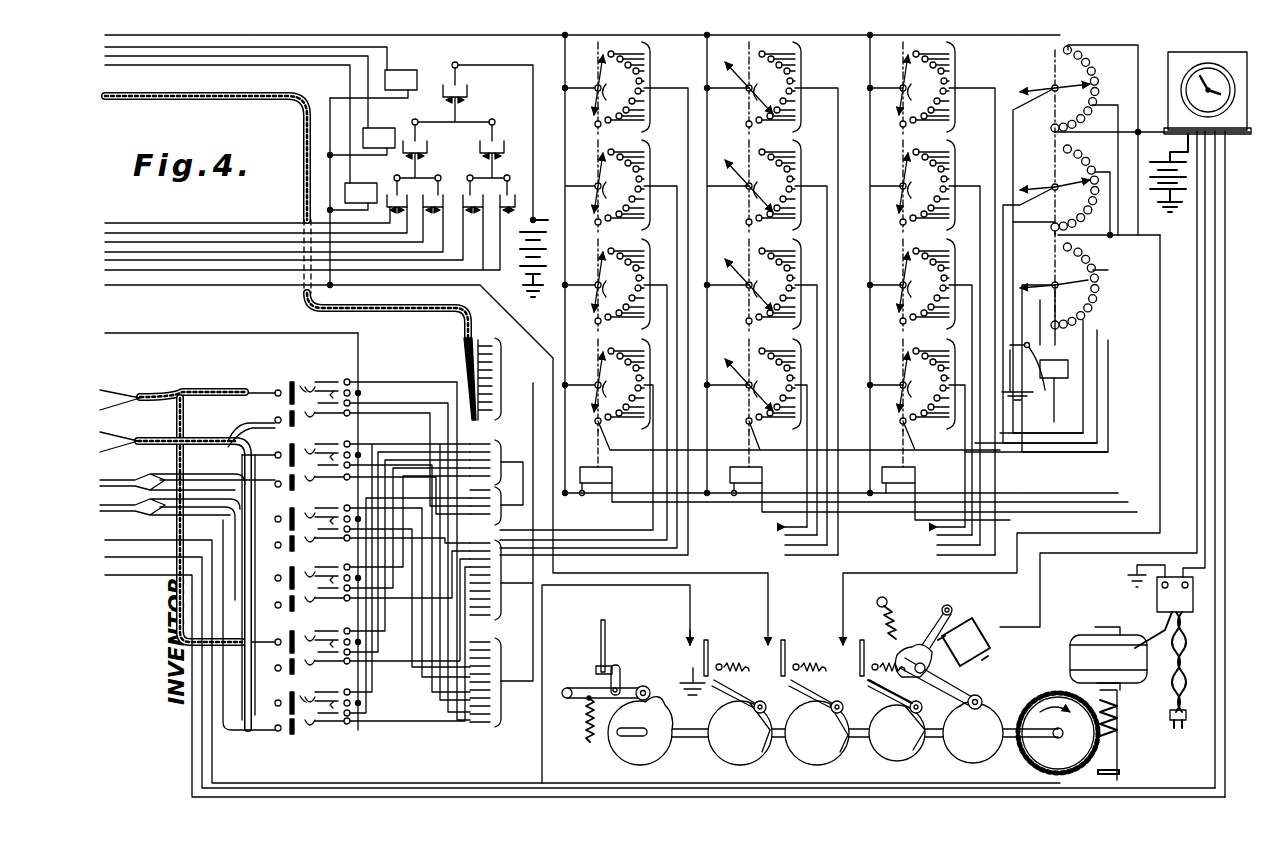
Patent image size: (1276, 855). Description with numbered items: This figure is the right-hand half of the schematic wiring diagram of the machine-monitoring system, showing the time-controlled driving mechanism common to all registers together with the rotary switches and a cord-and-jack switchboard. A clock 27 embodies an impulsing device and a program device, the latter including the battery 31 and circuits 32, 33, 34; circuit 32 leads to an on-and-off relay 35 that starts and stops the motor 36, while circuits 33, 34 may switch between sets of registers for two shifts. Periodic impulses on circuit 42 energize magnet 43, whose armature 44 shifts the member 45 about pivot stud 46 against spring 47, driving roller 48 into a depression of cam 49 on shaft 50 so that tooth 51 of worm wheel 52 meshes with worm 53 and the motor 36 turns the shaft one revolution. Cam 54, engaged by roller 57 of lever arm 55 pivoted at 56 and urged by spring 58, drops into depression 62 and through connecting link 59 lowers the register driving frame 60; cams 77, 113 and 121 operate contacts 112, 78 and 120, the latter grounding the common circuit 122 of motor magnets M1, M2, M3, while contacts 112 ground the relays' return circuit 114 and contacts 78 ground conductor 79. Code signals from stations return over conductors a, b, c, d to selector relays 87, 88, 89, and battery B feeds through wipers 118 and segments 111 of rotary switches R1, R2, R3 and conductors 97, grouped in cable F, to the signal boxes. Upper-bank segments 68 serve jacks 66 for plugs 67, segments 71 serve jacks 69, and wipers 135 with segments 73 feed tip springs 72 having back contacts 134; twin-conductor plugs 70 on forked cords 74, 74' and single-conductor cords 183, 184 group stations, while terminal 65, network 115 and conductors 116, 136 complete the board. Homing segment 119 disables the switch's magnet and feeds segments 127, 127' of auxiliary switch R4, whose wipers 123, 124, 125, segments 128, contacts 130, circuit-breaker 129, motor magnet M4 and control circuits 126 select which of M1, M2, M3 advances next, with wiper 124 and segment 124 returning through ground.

The conductor a is at (204, 34).
The conductor b is at (306, 35).
The conductor c is at (175, 59).
The conductor d is at (243, 62).
The selector relay 87 is at (395, 78).
The selector relay 88 is at (372, 135).
The selector relay 89 is at (353, 190).
The common return circuit 114 is at (328, 100).
The rectifier network 115 is at (460, 141).
The conductors 116 is at (235, 226).
The battery B is at (545, 238).
The transmission cable F is at (400, 310).
The conductor 97 is at (485, 372).
The conductor 136 is at (200, 333).
The jack spring 72 is at (348, 385).
The back contacts 134 is at (352, 387).
The jack 66 is at (338, 415).
The jack 69 is at (305, 388).
The twin-conductor cord and plug 70 is at (268, 393).
The forked twin-conductor cord 74 is at (172, 506).
The forked twin-conductor cord 74' is at (187, 574).
The single conductor plug 67 is at (240, 423).
The forked single-conductor cord 183 is at (168, 476).
The forked single-conductor cord 184 is at (162, 514).
The conductor 79 is at (212, 757).
The circuit 33 is at (420, 780).
The circuit 34 is at (495, 782).
The rotary switch R1 is at (594, 295).
The rotary switch R2 is at (772, 295).
The rotary switch R3 is at (841, 290).
The auxiliary switch R4 is at (1055, 242).
The segment 68 is at (774, 88).
The segment 71 is at (774, 186).
The segment 73 is at (774, 285).
The contact segment 111 is at (697, 385).
The wiper 118 is at (600, 362).
The wiper 65 is at (593, 142).
The wiper 135 is at (600, 250).
The segment 119 is at (598, 424).
The motor magnet M1 is at (854, 466).
The motor magnet M2 is at (933, 471).
The motor magnet M3 is at (946, 475).
The motor magnet M4 is at (1054, 391).
The wiper 124 is at (965, 205).
The wiper 123 is at (1048, 86).
The segment 128 is at (1064, 132).
The contact 130 is at (1060, 182).
The segment 127 is at (1061, 285).
The segment 127' is at (1039, 275).
The wiper 125 is at (1040, 292).
The circuit-breaker 129 is at (1023, 382).
The clock 27 is at (1225, 50).
The battery 31 is at (1168, 173).
The circuit 32 is at (1204, 269).
The circuit 42 is at (1197, 390).
The common circuit 122 is at (1160, 497).
The control circuit 126 is at (1078, 490).
The on-and-off relay 35 is at (1156, 598).
The motor 36 is at (1092, 630).
The worm 53 is at (1115, 740).
The worm wheel 52 is at (1058, 687).
The tooth 51 is at (1071, 740).
The cam 49 is at (973, 762).
The shaft 50 is at (930, 764).
The cam 113 is at (830, 762).
The cam 77 is at (756, 762).
The cam 54 is at (650, 762).
The cam-operated contacts 78 is at (706, 635).
The contacts 112 is at (788, 631).
The grounding contacts 120 is at (840, 642).
The cam 121 is at (893, 705).
The depression 62 is at (692, 673).
The register driving member or frame 60 is at (602, 630).
The connecting link 59 is at (620, 660).
The lever arm 55 is at (630, 684).
The roller 57 is at (650, 690).
The pivot 56 is at (565, 690).
The spring 58 is at (584, 740).
The armature 44 is at (940, 608).
The magnet 43 is at (972, 627).
The member 45 is at (946, 674).
The roller 48 is at (985, 696).
The pivot stud 46 is at (910, 644).
The spring 47 is at (878, 619).